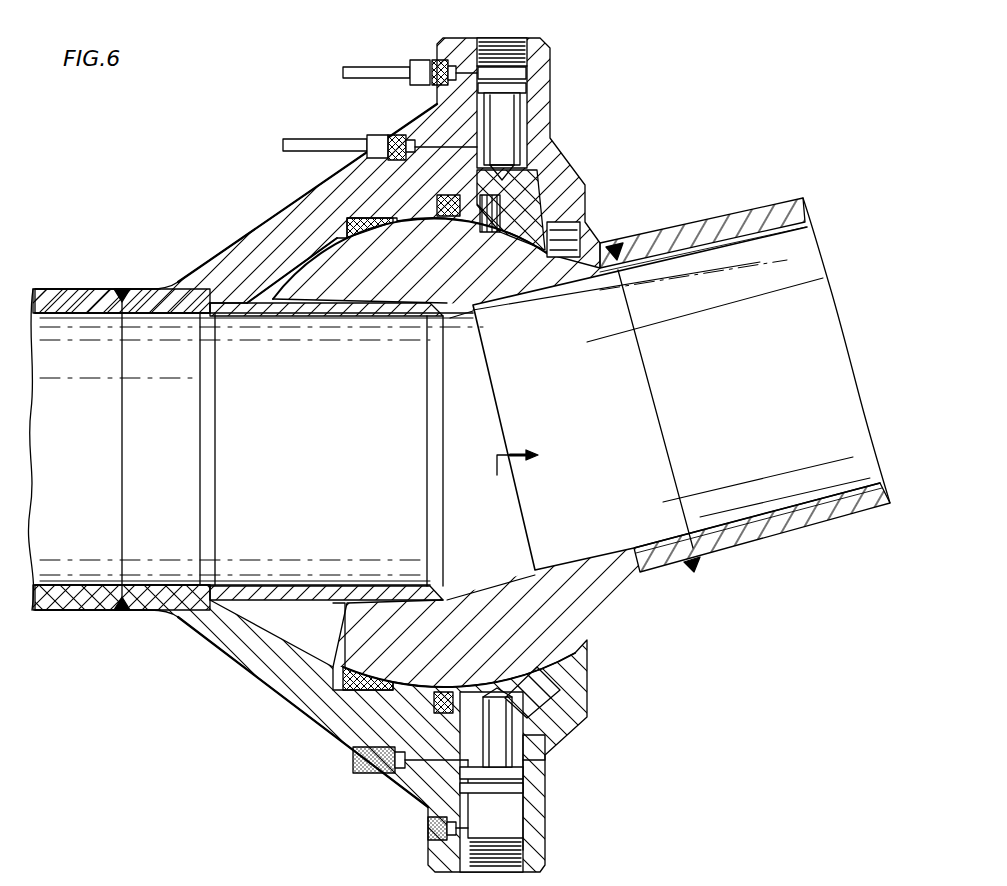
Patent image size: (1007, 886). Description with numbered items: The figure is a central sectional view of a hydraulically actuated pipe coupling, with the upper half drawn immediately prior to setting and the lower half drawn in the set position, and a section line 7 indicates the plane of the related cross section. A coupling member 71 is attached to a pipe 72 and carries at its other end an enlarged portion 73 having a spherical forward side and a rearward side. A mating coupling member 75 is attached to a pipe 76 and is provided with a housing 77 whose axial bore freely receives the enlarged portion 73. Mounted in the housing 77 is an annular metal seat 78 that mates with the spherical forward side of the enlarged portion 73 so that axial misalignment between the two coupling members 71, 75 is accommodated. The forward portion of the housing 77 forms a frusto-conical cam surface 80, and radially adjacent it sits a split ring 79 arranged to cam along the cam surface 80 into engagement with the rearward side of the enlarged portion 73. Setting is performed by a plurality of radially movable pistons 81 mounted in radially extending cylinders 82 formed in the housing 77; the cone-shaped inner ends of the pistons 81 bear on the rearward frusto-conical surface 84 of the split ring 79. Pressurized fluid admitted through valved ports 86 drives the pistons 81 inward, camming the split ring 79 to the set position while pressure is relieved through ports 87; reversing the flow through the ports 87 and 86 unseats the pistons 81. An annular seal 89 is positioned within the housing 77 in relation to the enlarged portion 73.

The section line 7 is at (524, 460).
The coupling member 71 is at (604, 249).
The pipe 72 is at (716, 224).
The enlarged portion 73 is at (510, 263).
The coupling member 75 is at (243, 238).
The pipe 76 is at (70, 288).
The housing 77 is at (548, 48).
The annular metal seat 78 is at (340, 226).
The split ring 79 is at (522, 196).
The cam surface 80 is at (565, 212).
The pistons 81 is at (505, 120).
The cylinders 82 is at (545, 810).
The rearward frusto-conical shaped surface 84 is at (460, 240).
The ports 86 is at (455, 44).
The ports 87 is at (432, 140).
The annular seal 89 is at (440, 220).